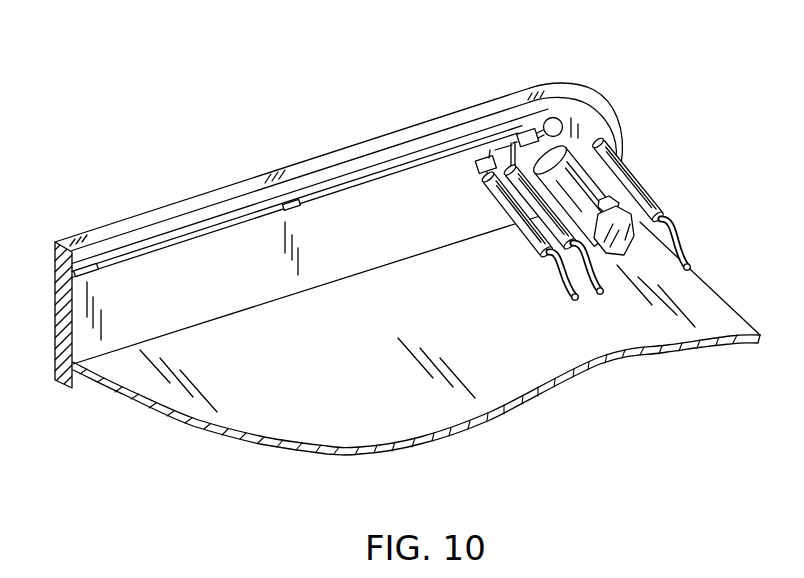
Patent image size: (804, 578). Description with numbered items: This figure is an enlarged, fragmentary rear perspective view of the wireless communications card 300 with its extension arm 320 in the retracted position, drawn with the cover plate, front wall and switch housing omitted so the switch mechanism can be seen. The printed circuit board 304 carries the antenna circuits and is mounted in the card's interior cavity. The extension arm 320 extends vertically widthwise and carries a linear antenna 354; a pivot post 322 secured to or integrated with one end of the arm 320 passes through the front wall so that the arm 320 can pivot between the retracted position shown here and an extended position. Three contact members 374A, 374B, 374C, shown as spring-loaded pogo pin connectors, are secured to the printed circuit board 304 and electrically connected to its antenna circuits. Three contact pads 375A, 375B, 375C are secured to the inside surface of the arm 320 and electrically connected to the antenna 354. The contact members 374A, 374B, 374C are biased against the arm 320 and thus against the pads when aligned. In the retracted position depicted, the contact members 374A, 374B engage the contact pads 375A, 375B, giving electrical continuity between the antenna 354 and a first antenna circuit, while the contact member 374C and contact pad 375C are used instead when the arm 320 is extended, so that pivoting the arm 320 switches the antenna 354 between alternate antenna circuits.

The wireless communications card 300 is at (188, 64).
The printed circuit board 304 is at (367, 408).
The extension arm 320 is at (182, 202).
The pivot post 322 is at (576, 147).
The antenna 354 is at (138, 255).
The contact member 374A is at (482, 190).
The contact member 374B is at (532, 231).
The contact member 374C is at (620, 173).
The contact pad 375A is at (478, 168).
The contact pad 375B is at (483, 153).
The contact pad 375C is at (546, 115).